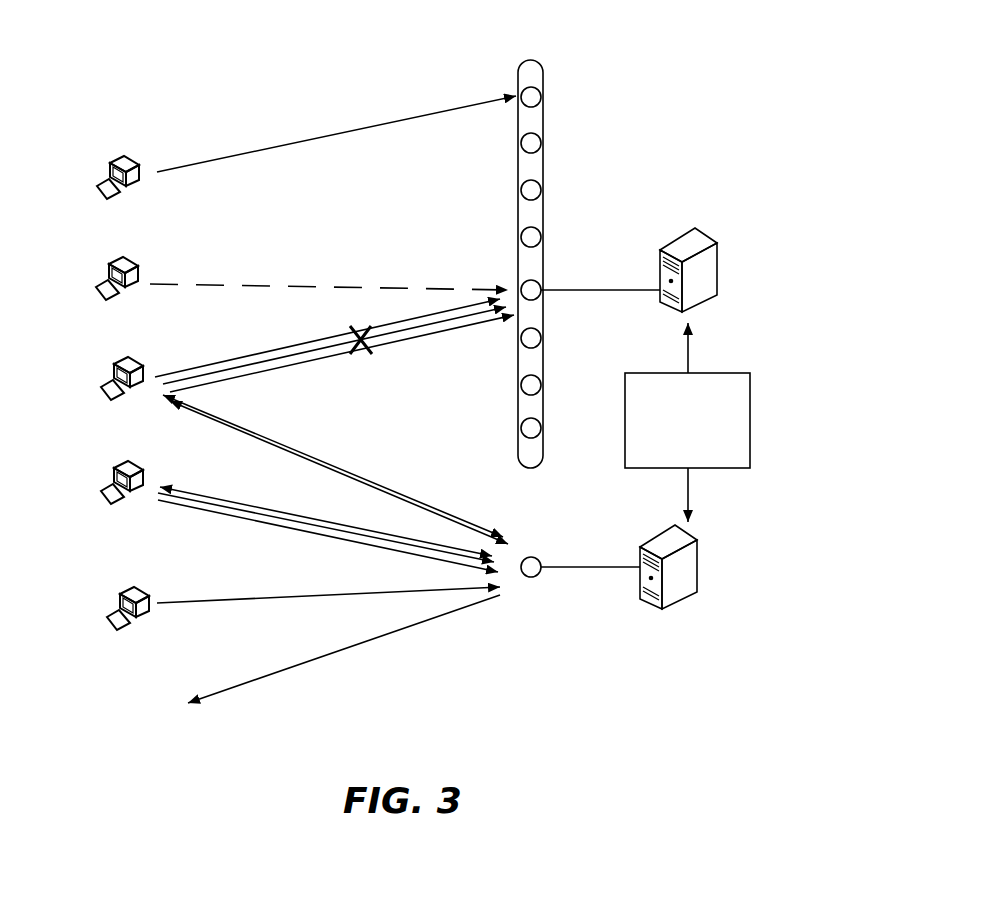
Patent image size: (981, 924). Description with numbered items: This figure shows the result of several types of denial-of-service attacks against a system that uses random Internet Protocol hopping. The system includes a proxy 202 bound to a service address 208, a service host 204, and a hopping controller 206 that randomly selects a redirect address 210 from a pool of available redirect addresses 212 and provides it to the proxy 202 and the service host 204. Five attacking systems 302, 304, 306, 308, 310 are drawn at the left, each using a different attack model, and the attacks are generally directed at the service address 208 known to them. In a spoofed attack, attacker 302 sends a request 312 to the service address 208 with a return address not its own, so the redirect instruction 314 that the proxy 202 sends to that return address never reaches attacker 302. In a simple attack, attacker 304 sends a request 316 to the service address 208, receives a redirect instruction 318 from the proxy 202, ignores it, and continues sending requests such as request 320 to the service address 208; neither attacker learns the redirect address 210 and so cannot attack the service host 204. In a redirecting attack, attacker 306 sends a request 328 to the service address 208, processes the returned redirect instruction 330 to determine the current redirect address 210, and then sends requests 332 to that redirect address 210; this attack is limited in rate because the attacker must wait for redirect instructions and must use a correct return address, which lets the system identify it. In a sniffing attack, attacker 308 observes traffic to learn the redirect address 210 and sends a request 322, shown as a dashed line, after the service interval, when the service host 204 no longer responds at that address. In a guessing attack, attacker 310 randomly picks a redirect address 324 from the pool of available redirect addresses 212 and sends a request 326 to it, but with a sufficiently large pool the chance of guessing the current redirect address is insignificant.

The pool of available redirect addresses 212 is at (532, 60).
The redirect address 324 is at (541, 97).
The redirect address 210 is at (534, 297).
The service host 204 is at (717, 243).
The hopping controller 206 is at (751, 418).
The proxy 202 is at (697, 543).
The service address 208 is at (535, 576).
The attacking system 310 is at (120, 173).
The attacking system 308 is at (116, 272).
The attacking system 306 is at (116, 366).
The attacking system 304 is at (118, 471).
The attacking system 302 is at (120, 596).
The request 326 is at (303, 140).
The request 322 is at (437, 288).
The requests 332 is at (329, 336).
The request 328 is at (275, 441).
The redirect instruction 330 is at (350, 477).
The request 316 is at (243, 504).
The redirect instruction 318 is at (367, 536).
The request 320 is at (258, 520).
The request 312 is at (320, 594).
The redirect instruction 314 is at (275, 672).